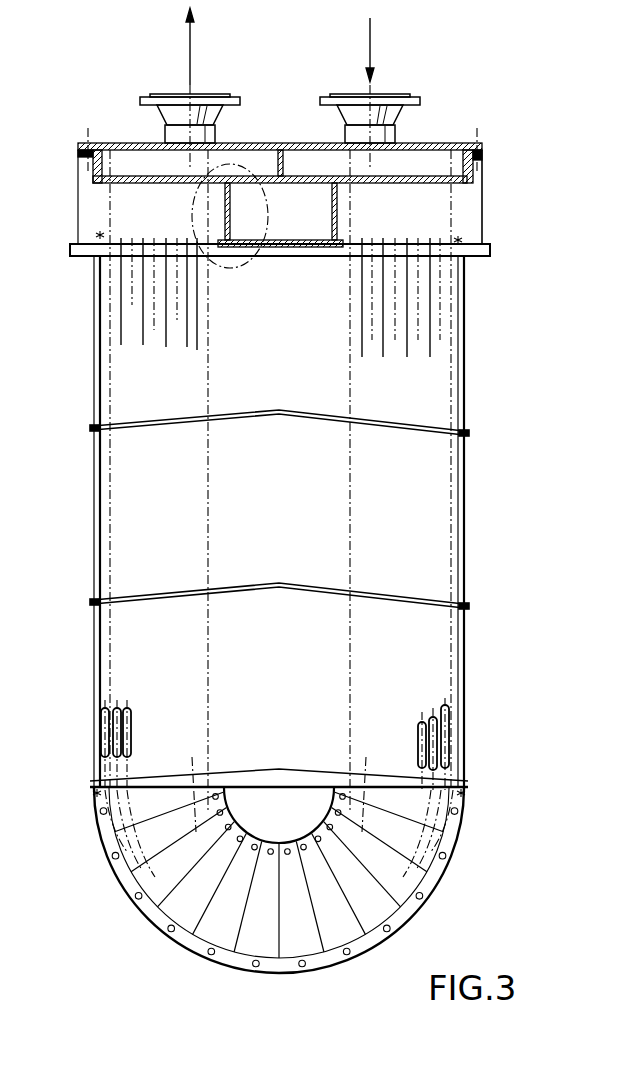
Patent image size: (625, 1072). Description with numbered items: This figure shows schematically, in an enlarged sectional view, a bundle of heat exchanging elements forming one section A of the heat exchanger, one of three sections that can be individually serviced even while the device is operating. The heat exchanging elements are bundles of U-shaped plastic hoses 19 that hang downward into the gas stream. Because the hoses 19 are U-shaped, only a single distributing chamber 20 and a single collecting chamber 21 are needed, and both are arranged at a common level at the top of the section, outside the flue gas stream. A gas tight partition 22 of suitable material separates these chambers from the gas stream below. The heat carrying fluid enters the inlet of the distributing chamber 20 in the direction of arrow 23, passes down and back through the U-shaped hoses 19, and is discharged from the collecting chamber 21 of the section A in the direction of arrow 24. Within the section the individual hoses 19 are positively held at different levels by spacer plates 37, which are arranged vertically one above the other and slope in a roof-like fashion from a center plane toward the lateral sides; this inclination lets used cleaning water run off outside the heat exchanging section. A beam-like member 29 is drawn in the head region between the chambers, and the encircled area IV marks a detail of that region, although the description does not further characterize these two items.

The U-shaped plastic hoses 19 is at (197, 347).
The distributing chamber 20 is at (422, 160).
The collecting chamber 21 is at (120, 158).
The gas tight partition 22 is at (490, 253).
The arrow 23 is at (372, 42).
The arrow 24 is at (192, 48).
The support beam 29 is at (337, 211).
The spacer plates 37 is at (153, 431).
The section A is at (478, 377).
The detail section IV is at (192, 206).